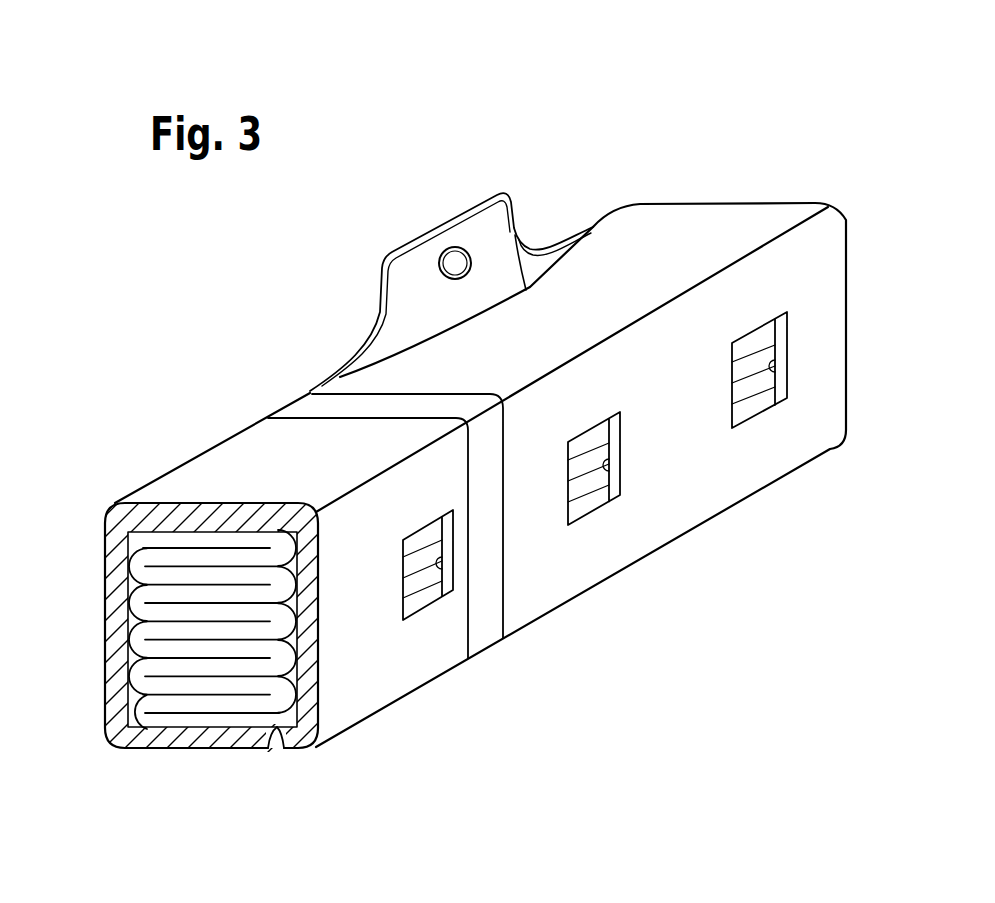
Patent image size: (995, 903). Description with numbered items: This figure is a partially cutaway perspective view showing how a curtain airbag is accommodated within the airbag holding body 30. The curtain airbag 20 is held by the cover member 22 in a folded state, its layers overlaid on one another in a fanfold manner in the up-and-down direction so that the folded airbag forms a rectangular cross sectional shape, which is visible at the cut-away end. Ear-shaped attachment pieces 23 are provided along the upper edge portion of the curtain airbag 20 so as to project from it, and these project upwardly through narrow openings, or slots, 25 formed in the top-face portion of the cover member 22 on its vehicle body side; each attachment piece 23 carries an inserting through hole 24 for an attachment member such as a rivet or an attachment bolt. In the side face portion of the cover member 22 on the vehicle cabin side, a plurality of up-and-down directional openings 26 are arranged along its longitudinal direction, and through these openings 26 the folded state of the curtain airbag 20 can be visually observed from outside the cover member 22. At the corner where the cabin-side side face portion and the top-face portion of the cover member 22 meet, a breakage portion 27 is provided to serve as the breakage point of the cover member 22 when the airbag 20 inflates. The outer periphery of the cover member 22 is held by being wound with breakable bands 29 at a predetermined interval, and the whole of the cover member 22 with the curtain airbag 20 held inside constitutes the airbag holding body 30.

The curtain airbag 20 is at (153, 575).
The cover member 22 is at (375, 685).
The attachment piece 23 is at (488, 223).
The inserting through hole 24 is at (456, 262).
The narrow opening (slot) 25 is at (521, 236).
The up-and-down directional opening 26 is at (440, 577).
The breakage portion 27 is at (272, 752).
The breakable band 29 is at (470, 587).
The airbag holding body 30 is at (229, 420).